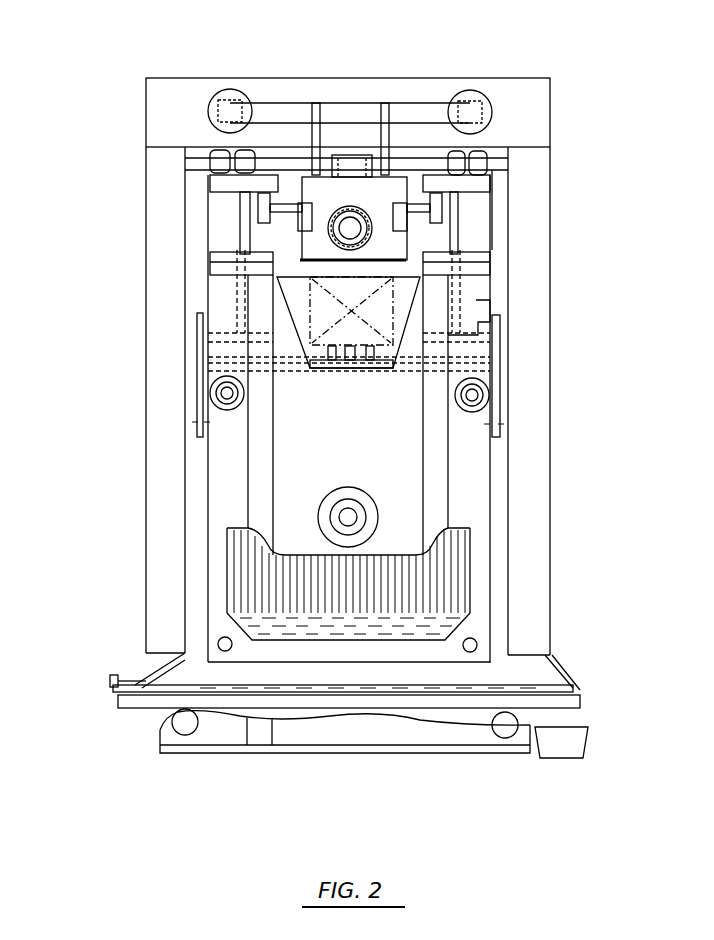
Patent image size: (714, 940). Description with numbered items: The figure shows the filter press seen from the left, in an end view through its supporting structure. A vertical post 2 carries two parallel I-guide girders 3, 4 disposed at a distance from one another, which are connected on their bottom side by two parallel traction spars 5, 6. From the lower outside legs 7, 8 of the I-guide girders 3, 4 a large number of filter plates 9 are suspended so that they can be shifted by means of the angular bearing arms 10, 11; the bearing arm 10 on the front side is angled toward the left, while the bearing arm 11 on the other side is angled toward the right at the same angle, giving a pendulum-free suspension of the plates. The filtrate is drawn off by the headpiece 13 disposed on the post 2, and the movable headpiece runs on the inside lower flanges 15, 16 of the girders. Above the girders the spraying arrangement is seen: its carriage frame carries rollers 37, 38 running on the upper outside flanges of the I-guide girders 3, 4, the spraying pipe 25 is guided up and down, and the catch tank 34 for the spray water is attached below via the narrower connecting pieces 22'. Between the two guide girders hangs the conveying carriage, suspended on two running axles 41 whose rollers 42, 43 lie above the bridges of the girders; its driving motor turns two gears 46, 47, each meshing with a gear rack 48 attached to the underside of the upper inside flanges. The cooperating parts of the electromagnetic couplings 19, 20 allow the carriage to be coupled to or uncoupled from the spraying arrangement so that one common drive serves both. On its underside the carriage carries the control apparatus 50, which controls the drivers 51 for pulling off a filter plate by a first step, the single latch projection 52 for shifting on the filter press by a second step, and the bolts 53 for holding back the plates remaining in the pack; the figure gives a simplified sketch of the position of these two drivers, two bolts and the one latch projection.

The vertical post 2 is at (262, 740).
The I-guide girder 3 is at (460, 222).
The I-guide girder 4 is at (242, 212).
The traction spar 5 is at (505, 737).
The traction spar 6 is at (185, 735).
The lower outside leg 7 is at (500, 346).
The lower outside leg 8 is at (200, 345).
The filter plate 9 is at (486, 596).
The angular bearing arm 10 is at (505, 398).
The angular bearing arm 11 is at (205, 400).
The headpiece 13 is at (482, 499).
The inside lower flange 15 is at (436, 336).
The inside lower flange 16 is at (262, 336).
The electromagnetic coupling 19 is at (240, 108).
The electromagnetic coupling 20 is at (230, 96).
The connecting piece 22' is at (124, 656).
The spraying pipe 25 is at (556, 675).
The catch tank 34 is at (135, 705).
The roller 37 is at (212, 160).
The roller 38 is at (470, 170).
The running axle 41 is at (350, 165).
The roller 42 is at (214, 181).
The roller 43 is at (456, 156).
The gear 46 is at (262, 232).
The gear 47 is at (440, 226).
The gear rack 48 is at (240, 196).
The control apparatus 50 is at (330, 279).
The driver 51 is at (342, 372).
The latch projection 52 is at (350, 370).
The bolt 53 is at (332, 366).